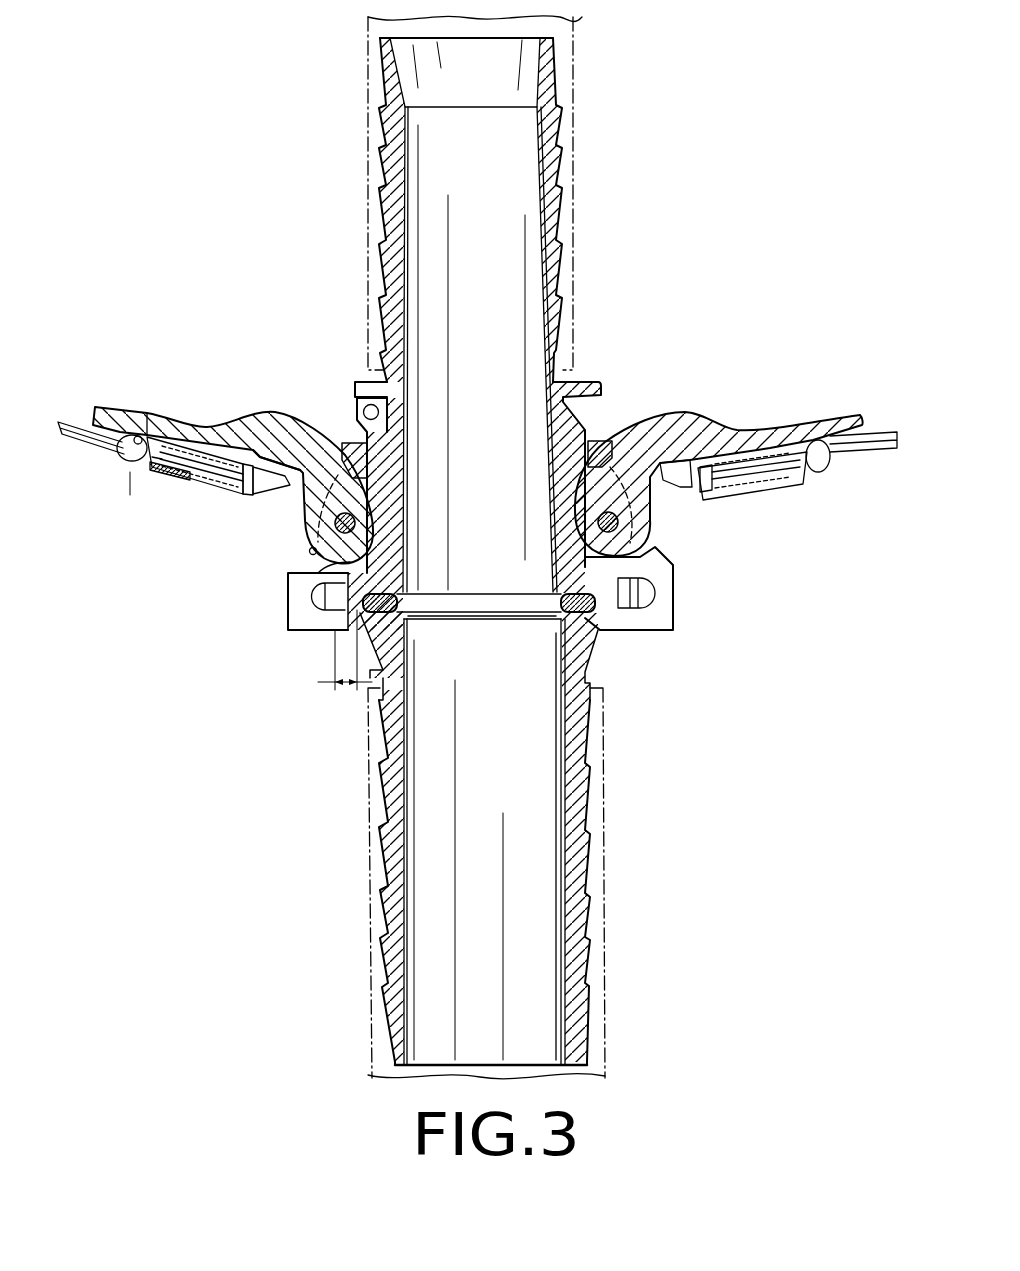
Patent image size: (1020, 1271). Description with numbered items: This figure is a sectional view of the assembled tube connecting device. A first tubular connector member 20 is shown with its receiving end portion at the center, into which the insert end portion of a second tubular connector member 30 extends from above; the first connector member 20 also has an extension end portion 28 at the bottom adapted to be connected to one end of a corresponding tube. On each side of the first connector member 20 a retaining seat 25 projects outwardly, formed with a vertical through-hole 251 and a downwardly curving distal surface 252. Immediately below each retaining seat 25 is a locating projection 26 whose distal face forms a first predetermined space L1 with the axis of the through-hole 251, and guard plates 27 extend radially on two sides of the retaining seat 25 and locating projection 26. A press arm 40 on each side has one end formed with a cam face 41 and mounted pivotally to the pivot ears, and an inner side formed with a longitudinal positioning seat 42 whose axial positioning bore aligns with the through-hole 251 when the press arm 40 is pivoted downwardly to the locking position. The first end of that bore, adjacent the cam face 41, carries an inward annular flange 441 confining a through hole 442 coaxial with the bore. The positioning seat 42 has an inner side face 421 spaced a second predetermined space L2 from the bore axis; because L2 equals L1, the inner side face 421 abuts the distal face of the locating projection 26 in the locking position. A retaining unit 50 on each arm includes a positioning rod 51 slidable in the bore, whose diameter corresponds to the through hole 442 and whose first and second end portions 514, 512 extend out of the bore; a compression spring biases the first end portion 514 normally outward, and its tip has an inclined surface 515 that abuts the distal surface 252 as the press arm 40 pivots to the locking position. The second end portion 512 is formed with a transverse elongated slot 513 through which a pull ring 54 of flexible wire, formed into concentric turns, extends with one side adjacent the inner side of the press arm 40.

The first tubular connector member 20 is at (349, 428).
The retaining seat 25 is at (372, 578).
The locating projection 26 is at (406, 673).
The guard plate 27 is at (298, 625).
The extension end portion 28 is at (582, 798).
The second tubular connector member 30 is at (588, 372).
The press arm 40 is at (288, 408).
The cam face 41 is at (312, 573).
The positioning seat 42 is at (153, 470).
The retaining unit 50 is at (223, 483).
The positioning rod 51 is at (193, 468).
The pull ring 54 is at (75, 447).
The through-hole 251 is at (330, 603).
The distal surface 252 is at (310, 598).
The inner side face 421 is at (160, 477).
The inward annular flange 441 is at (250, 450).
The through hole 442 is at (300, 472).
The second end portion 512 is at (135, 436).
The elongated slot 513 is at (136, 436).
The first end portion 514 is at (263, 492).
The inclined surface 515 is at (310, 553).
The first predetermined space L1 is at (345, 698).
The second predetermined space L2 is at (115, 481).